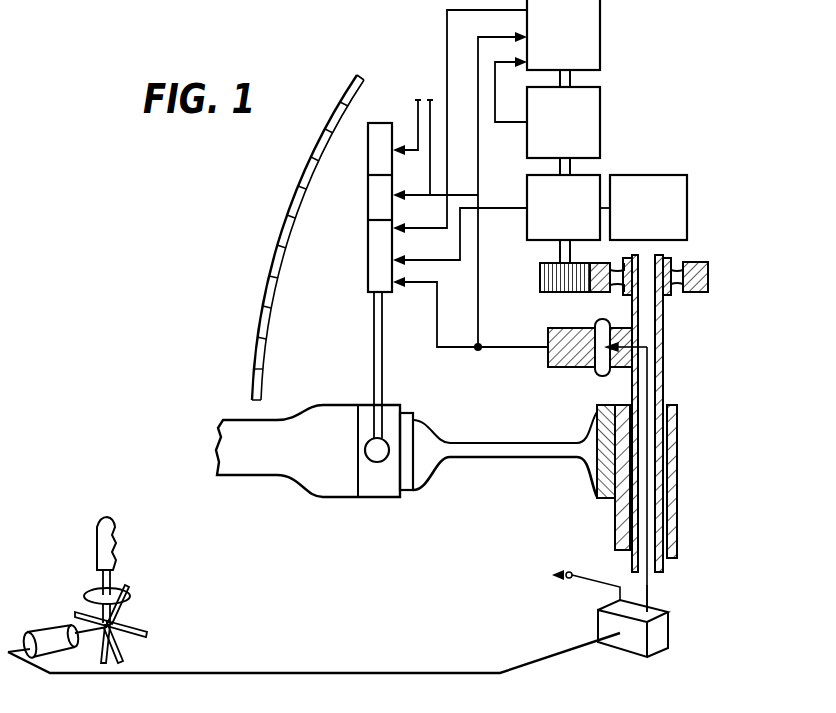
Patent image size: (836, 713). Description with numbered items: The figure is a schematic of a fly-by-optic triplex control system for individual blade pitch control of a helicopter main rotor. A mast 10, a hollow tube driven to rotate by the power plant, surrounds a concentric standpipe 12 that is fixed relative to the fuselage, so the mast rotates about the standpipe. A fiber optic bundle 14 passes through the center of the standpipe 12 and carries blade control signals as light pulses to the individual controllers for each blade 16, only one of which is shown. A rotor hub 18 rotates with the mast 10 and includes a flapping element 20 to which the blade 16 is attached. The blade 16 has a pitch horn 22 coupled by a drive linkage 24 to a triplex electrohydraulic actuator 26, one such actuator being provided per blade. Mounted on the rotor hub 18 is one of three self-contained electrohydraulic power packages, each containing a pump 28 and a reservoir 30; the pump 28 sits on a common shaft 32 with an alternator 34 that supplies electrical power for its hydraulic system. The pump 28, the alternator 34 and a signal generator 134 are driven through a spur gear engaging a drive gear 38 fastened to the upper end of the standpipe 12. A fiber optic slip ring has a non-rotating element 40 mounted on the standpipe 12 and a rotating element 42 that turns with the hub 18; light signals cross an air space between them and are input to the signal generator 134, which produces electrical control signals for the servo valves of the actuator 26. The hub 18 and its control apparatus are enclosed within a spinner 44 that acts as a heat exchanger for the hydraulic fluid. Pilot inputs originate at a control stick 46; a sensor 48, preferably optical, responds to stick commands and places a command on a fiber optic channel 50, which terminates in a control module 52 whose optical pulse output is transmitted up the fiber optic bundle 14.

The mast 10 is at (615, 528).
The standpipe 12 is at (663, 572).
The fiber optic bundle (transmission path) 14 is at (650, 588).
The blade 16 is at (238, 420).
The rotor hub 18 is at (450, 522).
The flapping element 20 is at (463, 443).
The pitch horn 22 is at (378, 462).
The drive linkage 24 is at (374, 378).
The triplex electrohydraulic actuator 26 is at (380, 123).
The pump 28 is at (595, 175).
The reservoir 30 is at (663, 175).
The common shaft 32 is at (560, 262).
The alternator 34 is at (600, 108).
The drive gear 38 is at (690, 263).
The non-rotating element of fiber optic slip ring 40 is at (606, 375).
The rotating element of fiber optic slip ring 42 is at (548, 367).
The spinner 44 is at (294, 177).
The control stick 46 is at (112, 533).
The sensor 48 is at (55, 632).
The fiber optic channel 50 is at (237, 672).
The control module 52 is at (598, 620).
The signal generator 134 is at (600, 32).